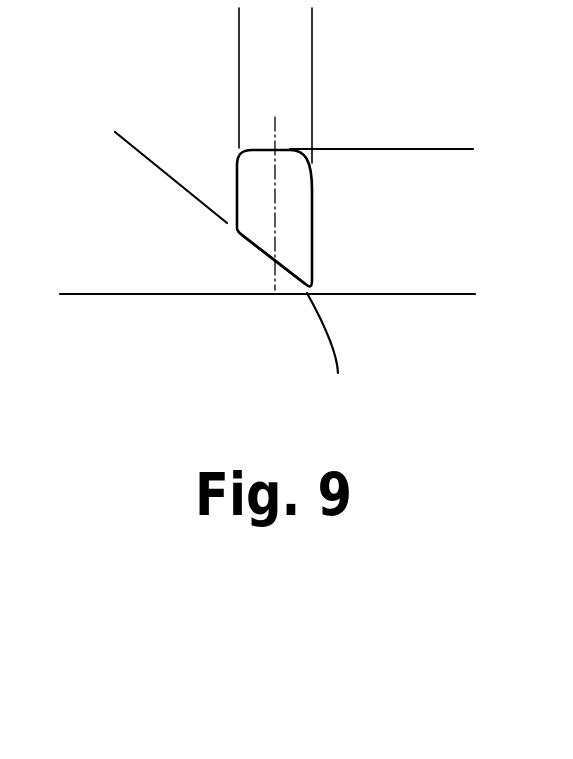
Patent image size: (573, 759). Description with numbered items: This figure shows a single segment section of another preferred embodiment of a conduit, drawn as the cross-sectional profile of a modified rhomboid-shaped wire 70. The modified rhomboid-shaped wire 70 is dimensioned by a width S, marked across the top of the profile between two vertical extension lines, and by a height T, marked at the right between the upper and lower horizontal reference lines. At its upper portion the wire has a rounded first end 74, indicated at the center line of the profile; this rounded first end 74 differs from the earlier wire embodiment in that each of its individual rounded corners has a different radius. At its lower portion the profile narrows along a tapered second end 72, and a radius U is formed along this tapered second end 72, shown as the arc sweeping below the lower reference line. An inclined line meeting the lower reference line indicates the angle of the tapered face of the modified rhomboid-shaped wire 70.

The modified rhomboid-shaped wire 70 is at (236, 163).
The tapered second end 72 is at (253, 242).
The rounded first end 74 is at (280, 147).
The width S is at (239, 36).
The height T is at (448, 149).
The radius U is at (332, 345).